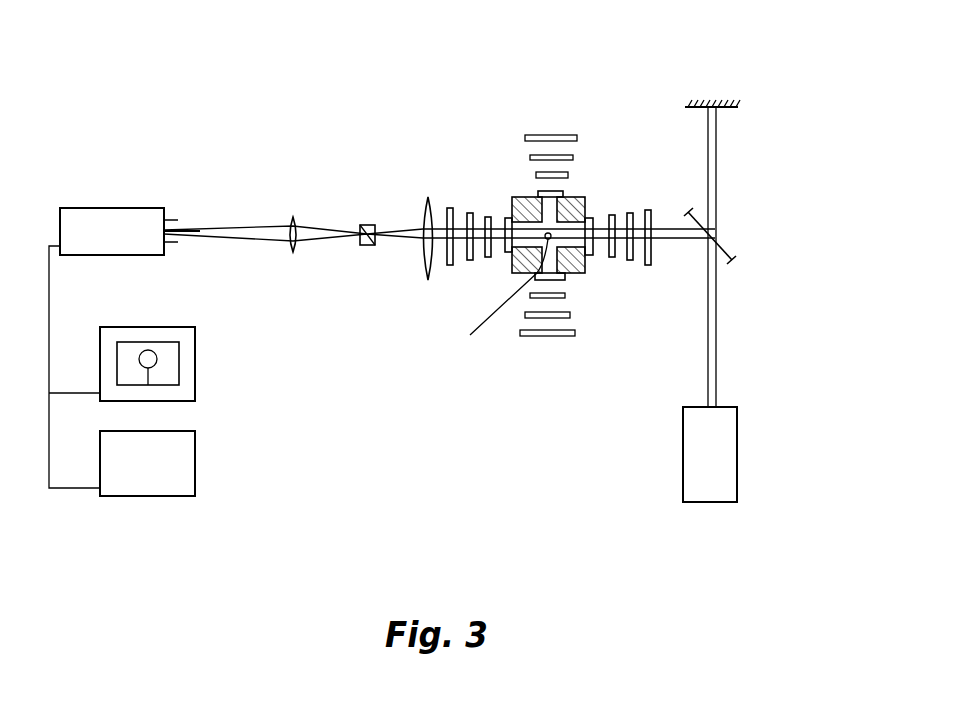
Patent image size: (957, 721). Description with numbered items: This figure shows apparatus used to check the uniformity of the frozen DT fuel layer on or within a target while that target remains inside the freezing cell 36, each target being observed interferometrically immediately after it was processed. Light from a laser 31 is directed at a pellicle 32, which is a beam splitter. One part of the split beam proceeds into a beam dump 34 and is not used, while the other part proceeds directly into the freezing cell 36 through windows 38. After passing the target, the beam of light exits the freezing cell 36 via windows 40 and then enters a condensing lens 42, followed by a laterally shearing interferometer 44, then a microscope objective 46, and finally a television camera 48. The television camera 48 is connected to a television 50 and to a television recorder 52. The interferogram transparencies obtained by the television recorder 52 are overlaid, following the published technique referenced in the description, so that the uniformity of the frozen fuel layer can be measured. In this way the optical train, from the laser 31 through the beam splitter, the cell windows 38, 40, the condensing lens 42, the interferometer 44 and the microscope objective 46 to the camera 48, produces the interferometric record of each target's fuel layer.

The laser 31 is at (737, 458).
The pellicle 32 is at (716, 237).
The beam dump 34 is at (738, 105).
The freezing cell 36 is at (585, 278).
The windows 38 is at (649, 210).
The windows 40 is at (506, 253).
The condensing lens 42 is at (424, 200).
The laterally shearing interferometer 44 is at (363, 225).
The microscope objective 46 is at (293, 216).
The television camera 48 is at (116, 206).
The television 50 is at (115, 327).
The television recorder 52 is at (120, 489).